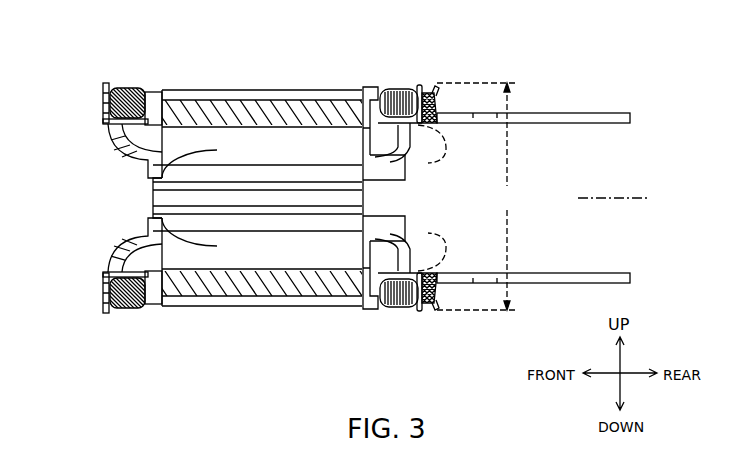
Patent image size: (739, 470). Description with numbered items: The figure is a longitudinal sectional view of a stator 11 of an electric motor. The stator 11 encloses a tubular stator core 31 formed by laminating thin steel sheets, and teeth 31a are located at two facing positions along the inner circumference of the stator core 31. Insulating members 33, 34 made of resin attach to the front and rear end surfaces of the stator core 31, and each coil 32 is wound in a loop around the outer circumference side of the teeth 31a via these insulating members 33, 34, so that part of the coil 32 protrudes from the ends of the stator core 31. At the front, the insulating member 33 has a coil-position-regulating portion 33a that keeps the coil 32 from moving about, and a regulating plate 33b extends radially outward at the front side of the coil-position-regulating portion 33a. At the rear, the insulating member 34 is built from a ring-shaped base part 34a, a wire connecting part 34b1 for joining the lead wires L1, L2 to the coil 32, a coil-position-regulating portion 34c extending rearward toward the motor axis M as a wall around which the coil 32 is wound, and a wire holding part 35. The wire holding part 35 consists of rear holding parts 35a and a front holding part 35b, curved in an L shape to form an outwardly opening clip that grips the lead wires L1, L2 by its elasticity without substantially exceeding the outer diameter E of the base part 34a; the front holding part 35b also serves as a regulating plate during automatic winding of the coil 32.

The stator 11 is at (283, 70).
The stator core 31 is at (240, 110).
The teeth 31a is at (155, 176).
The coil 32 is at (125, 88).
The insulating member 33 is at (153, 96).
The coil-position-regulating portion 33a is at (140, 138).
The regulating plate 33b is at (104, 96).
The insulating member 34 is at (368, 84).
The base part 34a is at (368, 306).
The wire connecting part 34b1 is at (393, 168).
The coil-position-regulating portion 34c is at (425, 122).
The wire holding part 35 is at (435, 82).
The rear holding parts 35a is at (438, 96).
The front holding part 35b is at (418, 84).
The lead wire L1 is at (447, 147).
The lead wire L2 is at (598, 112).
The outer diameter E is at (476, 196).
The motor axis M is at (621, 199).